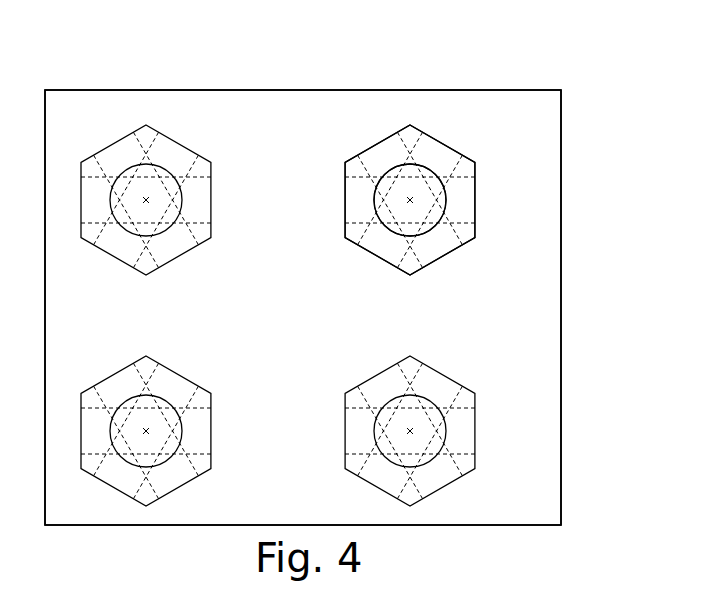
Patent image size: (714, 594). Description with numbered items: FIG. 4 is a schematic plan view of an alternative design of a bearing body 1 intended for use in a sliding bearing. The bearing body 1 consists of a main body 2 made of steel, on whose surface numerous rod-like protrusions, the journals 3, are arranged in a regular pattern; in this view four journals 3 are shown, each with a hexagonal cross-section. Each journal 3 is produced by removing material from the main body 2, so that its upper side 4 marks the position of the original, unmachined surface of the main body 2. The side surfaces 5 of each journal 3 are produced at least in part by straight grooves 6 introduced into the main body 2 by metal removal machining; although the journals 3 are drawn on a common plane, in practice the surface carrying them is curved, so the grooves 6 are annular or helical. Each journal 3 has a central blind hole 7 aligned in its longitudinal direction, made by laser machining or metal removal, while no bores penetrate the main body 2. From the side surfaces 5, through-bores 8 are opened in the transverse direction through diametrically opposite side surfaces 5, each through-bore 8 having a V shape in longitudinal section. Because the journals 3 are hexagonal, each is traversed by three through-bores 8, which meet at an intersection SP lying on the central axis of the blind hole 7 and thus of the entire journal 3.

The bearing body 1 is at (585, 142).
The main body 2 is at (561, 253).
The journal 3 is at (475, 162).
The upper side 4 is at (445, 163).
The side surface 5 is at (210, 230).
The groove 6 is at (288, 162).
The blind hole 7 is at (157, 192).
The through-bore 8 is at (387, 388).
The intersection SP is at (145, 197).